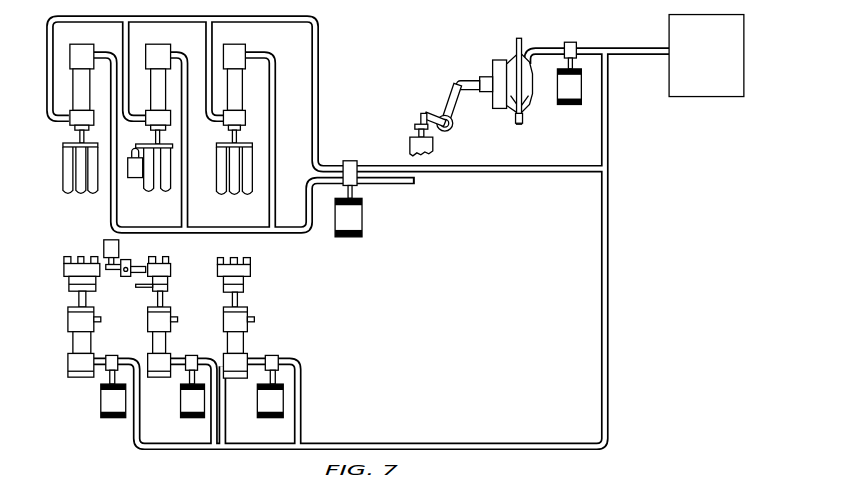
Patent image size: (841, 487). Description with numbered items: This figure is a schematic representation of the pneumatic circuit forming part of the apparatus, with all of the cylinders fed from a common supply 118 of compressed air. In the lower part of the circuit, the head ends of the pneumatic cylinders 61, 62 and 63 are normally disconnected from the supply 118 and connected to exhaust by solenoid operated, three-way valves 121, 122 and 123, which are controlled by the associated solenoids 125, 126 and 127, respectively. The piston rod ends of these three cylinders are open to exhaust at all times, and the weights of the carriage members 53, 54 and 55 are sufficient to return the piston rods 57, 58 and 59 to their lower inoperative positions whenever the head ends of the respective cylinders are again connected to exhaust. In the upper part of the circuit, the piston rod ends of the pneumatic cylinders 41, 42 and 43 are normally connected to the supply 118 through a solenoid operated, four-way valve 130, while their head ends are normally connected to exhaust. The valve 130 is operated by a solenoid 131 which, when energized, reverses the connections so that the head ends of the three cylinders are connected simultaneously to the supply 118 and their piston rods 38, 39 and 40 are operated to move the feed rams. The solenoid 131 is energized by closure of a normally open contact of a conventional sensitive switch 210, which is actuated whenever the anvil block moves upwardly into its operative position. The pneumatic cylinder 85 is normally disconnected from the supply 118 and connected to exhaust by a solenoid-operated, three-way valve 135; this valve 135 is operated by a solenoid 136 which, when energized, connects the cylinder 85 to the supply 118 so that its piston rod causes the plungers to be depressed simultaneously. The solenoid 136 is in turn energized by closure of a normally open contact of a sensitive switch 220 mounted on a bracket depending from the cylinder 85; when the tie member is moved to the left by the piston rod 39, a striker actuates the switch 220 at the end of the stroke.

The piston rod 38 is at (78, 135).
The piston rod 39 is at (155, 137).
The piston rod 40 is at (232, 137).
The pneumatic cylinder 41 is at (85, 98).
The pneumatic cylinder 42 is at (150, 93).
The pneumatic cylinder 43 is at (252, 93).
The carriage member 53 is at (63, 270).
The carriage member 54 is at (170, 273).
The carriage member 55 is at (250, 273).
The piston rod 57 is at (78, 302).
The piston rod 58 is at (152, 302).
The piston rod 59 is at (232, 302).
The pneumatic cylinder 61 is at (72, 340).
The pneumatic cylinder 62 is at (152, 340).
The pneumatic cylinder 63 is at (228, 340).
The pneumatic cylinder 85 is at (521, 42).
The supply of compressed air 118 is at (672, 30).
The solenoid operated three-way valve 121 is at (117, 351).
The solenoid operated three-way valve 122 is at (199, 352).
The solenoid operated three-way valve 123 is at (283, 352).
The solenoid 125 is at (102, 405).
The solenoid 126 is at (183, 408).
The solenoid 127 is at (257, 410).
The solenoid operated four-way valve 130 is at (348, 158).
The solenoid 131 is at (358, 212).
The solenoid-operated three-way valve 135 is at (573, 40).
The solenoid 136 is at (560, 92).
The sensitive switch 210 is at (103, 247).
The sensitive switch 220 is at (135, 178).